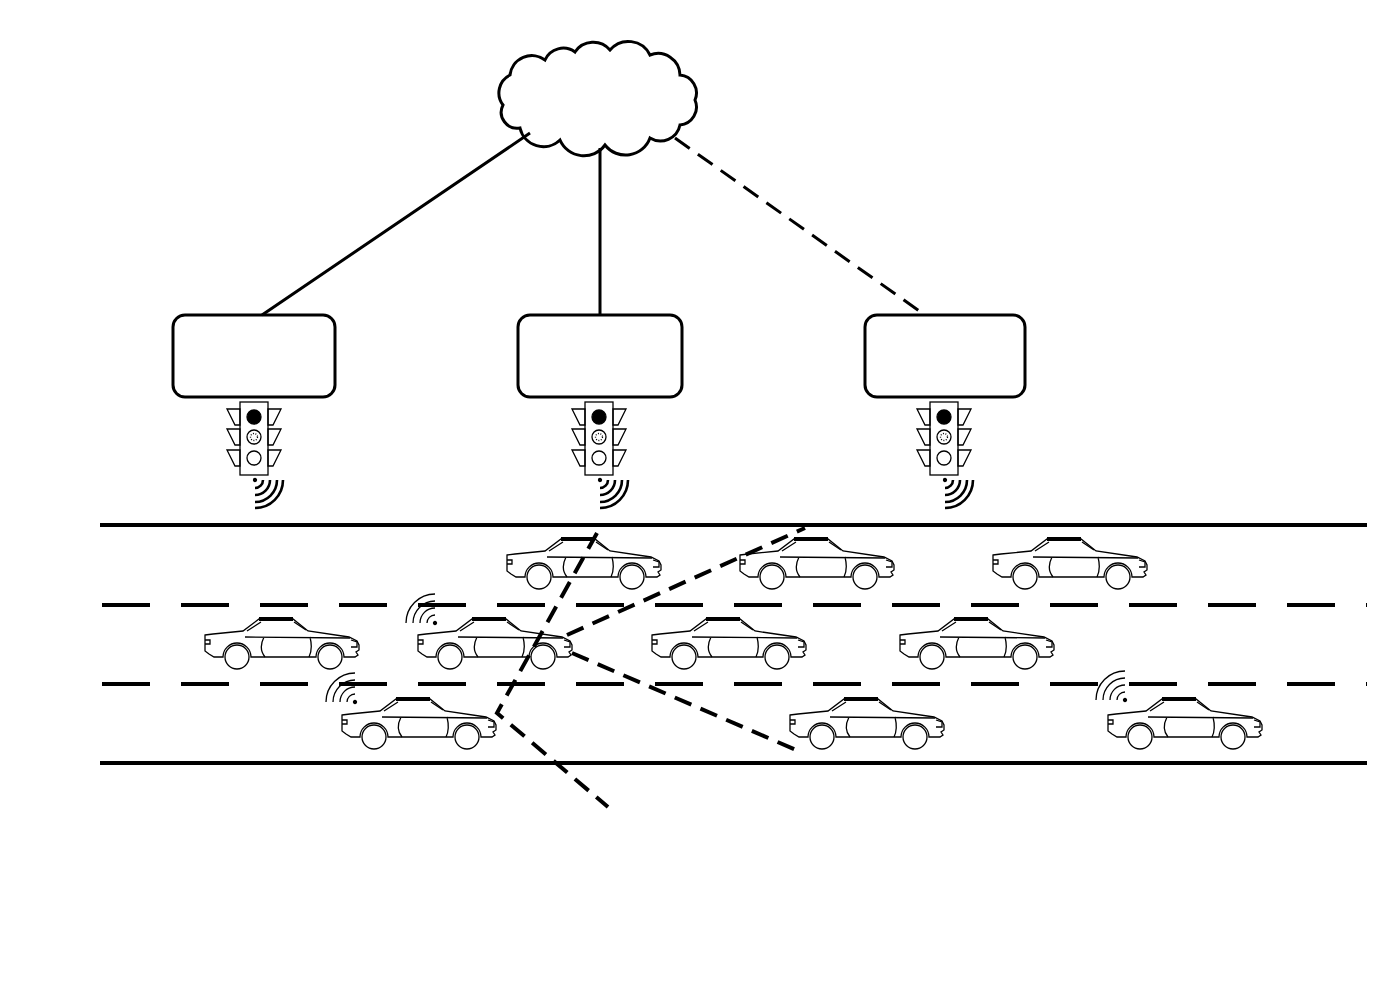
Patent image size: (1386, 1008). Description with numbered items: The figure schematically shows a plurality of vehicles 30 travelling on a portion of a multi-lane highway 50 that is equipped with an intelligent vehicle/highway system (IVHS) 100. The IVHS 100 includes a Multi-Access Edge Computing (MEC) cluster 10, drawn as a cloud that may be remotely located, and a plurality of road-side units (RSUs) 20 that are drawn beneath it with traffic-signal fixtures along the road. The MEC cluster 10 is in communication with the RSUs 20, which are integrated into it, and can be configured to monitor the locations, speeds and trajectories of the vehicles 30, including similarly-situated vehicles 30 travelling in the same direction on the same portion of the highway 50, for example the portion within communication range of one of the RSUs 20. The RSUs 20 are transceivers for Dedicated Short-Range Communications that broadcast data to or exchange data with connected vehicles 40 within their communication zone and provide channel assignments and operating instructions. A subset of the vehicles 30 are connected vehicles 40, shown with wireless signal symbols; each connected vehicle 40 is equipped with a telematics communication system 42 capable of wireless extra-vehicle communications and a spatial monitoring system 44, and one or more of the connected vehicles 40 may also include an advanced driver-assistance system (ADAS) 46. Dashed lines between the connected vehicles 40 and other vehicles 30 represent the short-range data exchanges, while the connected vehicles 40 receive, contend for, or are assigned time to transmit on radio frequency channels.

The intelligent vehicle/highway system (IVHS) 100 is at (337, 193).
The Multi-Access Edge Computing (MEC) cluster 10 is at (598, 98).
The road-side unit (RSU) 20 is at (599, 411).
The vehicle 30 is at (270, 618).
The connected vehicle 40 is at (480, 618).
The telematics communication system 42 is at (291, 785).
The spatial monitoring system 44 is at (276, 837).
The advanced driver-assistance system (ADAS) 46 is at (342, 726).
The multi-lane highway 50 is at (733, 644).